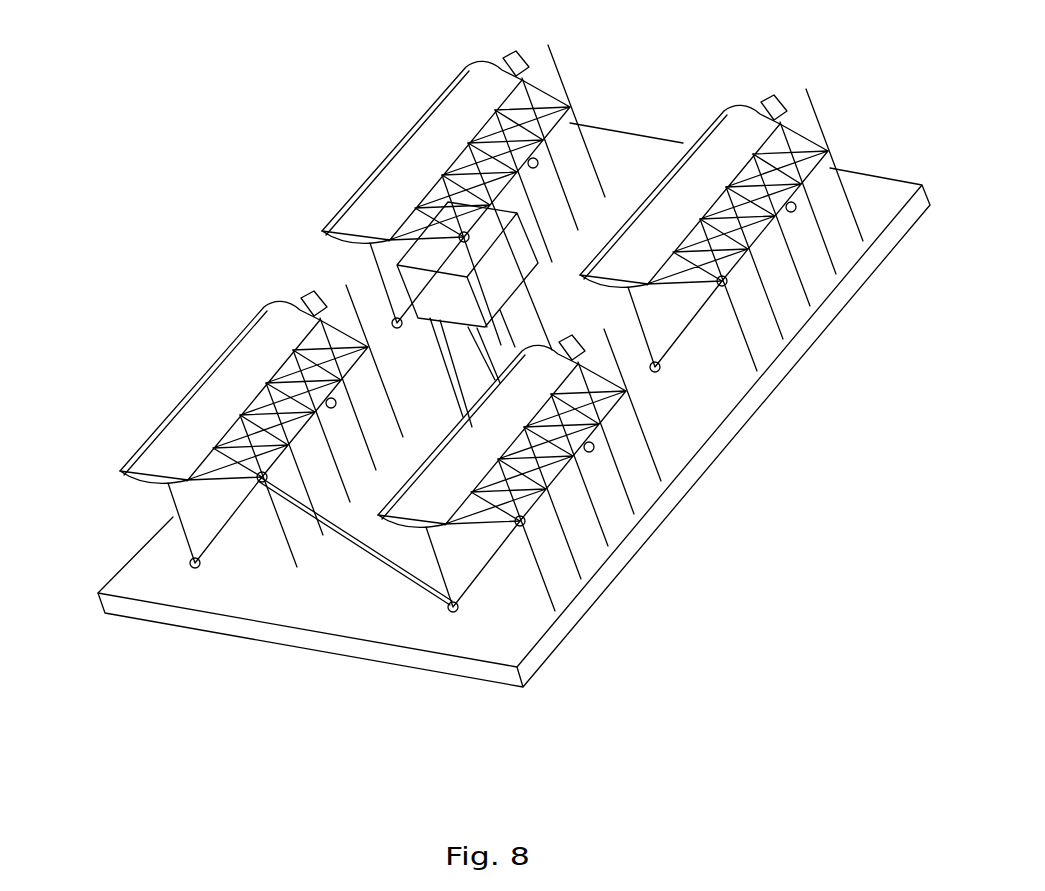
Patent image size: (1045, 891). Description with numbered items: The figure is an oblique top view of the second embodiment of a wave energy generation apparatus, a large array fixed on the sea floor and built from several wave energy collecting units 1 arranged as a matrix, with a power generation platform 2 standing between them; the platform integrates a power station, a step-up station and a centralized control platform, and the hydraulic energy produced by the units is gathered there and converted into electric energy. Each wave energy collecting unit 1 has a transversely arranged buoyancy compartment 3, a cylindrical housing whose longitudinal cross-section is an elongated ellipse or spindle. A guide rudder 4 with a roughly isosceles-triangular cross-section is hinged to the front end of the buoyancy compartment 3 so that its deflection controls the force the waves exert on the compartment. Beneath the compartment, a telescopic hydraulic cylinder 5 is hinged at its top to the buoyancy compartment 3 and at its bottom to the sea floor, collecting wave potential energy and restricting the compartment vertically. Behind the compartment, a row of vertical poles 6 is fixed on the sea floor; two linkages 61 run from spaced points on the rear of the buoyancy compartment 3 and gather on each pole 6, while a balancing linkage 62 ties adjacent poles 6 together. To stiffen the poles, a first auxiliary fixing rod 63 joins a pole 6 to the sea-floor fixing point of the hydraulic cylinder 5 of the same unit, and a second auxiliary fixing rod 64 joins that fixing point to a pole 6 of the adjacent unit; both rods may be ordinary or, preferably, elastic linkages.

The wave energy collecting unit 1 is at (473, 178).
The power generation platform 2 is at (440, 233).
The buoyancy compartment 3 is at (213, 383).
The guide rudder 4 is at (116, 441).
The hydraulic cylinder 5 is at (173, 517).
The pole 6 is at (562, 85).
The linkage 61 is at (473, 631).
The balancing linkage 62 is at (579, 490).
The first auxiliary fixing rod 63 is at (215, 591).
The second auxiliary fixing rod 64 is at (355, 601).